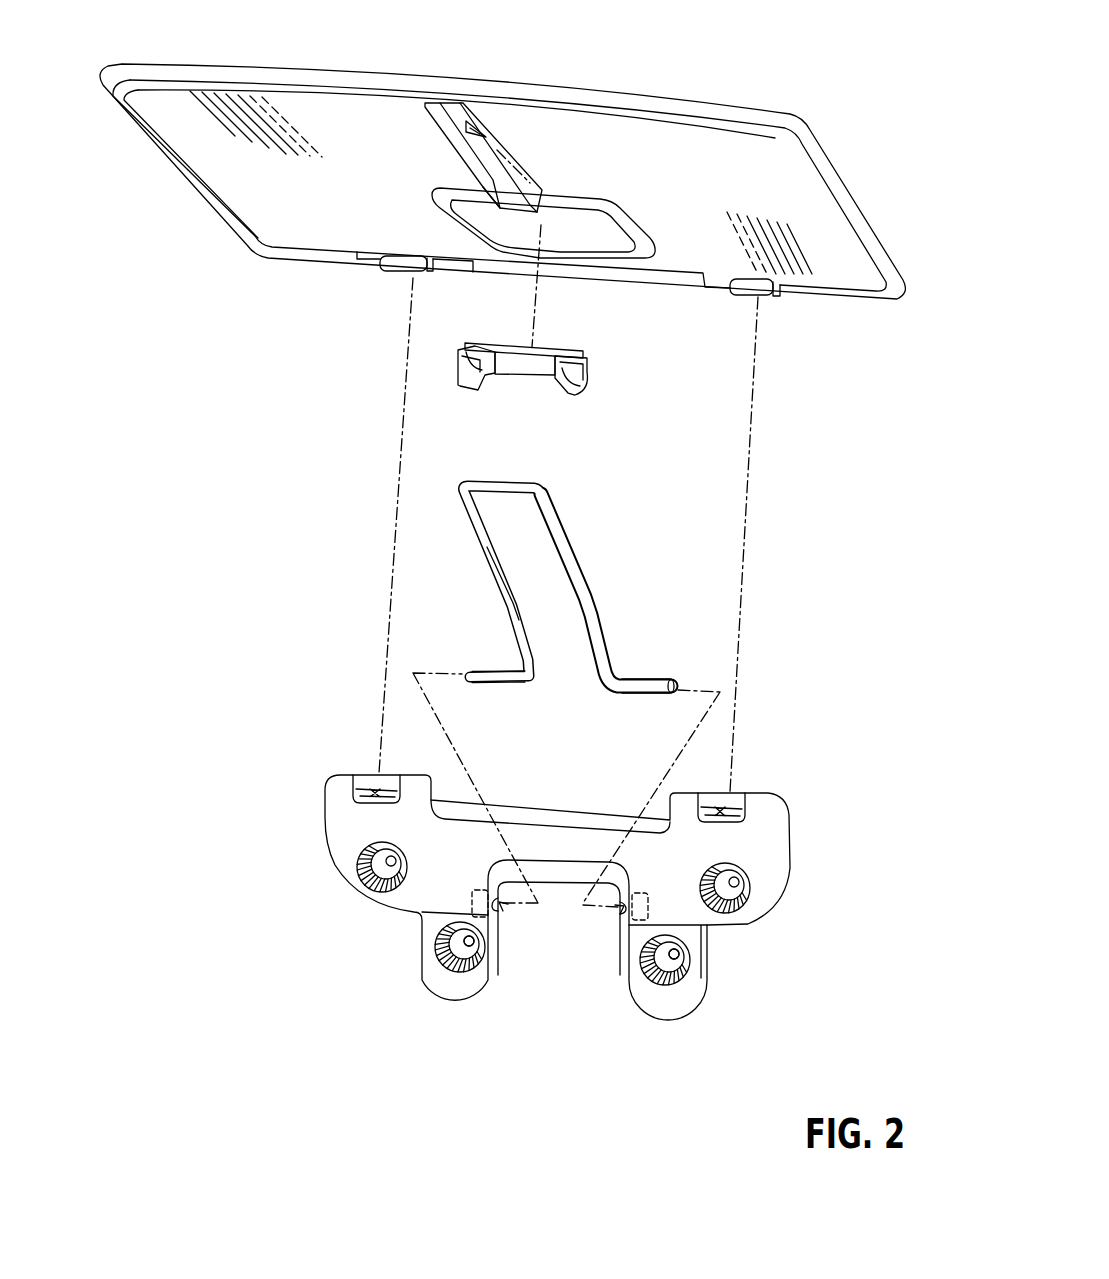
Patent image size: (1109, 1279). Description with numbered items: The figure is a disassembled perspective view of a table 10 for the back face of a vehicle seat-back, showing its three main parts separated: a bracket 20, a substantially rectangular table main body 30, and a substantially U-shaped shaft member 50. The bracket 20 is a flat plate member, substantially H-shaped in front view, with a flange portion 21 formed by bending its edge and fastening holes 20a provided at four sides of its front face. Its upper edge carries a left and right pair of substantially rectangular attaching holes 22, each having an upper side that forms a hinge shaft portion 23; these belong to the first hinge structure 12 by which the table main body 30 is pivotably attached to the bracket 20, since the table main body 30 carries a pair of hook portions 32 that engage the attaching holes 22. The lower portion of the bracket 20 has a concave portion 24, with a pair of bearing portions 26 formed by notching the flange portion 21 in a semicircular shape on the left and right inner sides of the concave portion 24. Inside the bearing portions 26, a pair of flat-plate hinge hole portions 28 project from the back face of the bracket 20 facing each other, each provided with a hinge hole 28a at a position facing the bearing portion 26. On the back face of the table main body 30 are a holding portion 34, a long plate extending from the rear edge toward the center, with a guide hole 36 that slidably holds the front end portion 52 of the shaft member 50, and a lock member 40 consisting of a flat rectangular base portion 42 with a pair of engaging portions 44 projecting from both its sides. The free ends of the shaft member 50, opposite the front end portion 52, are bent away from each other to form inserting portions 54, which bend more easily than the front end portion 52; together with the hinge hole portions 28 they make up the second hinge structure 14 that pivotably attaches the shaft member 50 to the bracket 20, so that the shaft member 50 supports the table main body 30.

The table 10 is at (502, 563).
The first hinge structure 12 is at (533, 539).
The second hinge structure 14 is at (575, 872).
The bracket 20 is at (532, 939).
The fastening holes 20a is at (367, 889).
The flange portion 21 is at (782, 842).
The attaching hole 22 is at (357, 792).
The hinge shaft portion 23 is at (366, 772).
The concave portion 24 is at (500, 978).
The bearing portion 26 is at (504, 912).
The hinge hole portion 28 is at (464, 968).
The hinge hole 28a is at (560, 877).
The table main body 30 is at (502, 160).
The hook portion 32 is at (398, 273).
The holding portion 34 is at (500, 117).
The guide hole 36 is at (507, 160).
The lock member 40 is at (588, 347).
The base portion 42 is at (527, 362).
The engaging portions 44 is at (475, 343).
The shaft member 50 is at (576, 549).
The front end portion 52 is at (491, 487).
The inserting portions 54 is at (484, 680).